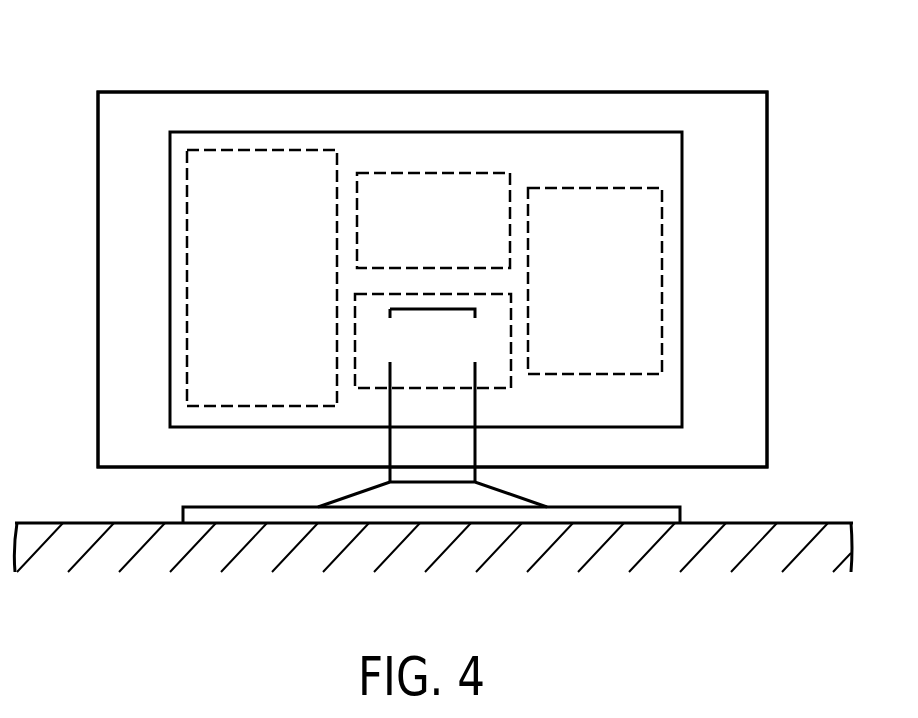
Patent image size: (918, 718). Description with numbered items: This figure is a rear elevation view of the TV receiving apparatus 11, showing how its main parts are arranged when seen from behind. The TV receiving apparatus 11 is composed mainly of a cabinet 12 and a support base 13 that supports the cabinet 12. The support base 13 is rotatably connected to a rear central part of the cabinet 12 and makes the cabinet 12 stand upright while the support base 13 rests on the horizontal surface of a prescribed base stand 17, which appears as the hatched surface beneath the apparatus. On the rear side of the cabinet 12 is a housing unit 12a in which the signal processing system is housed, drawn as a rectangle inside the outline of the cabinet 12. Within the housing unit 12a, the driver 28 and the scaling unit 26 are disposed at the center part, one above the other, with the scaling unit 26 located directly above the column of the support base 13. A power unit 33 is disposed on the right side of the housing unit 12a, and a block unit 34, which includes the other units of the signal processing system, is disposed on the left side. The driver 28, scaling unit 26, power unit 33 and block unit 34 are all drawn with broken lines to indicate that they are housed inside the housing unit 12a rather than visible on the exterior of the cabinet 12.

The TV receiving apparatus 11 is at (454, 62).
The cabinet 12 is at (715, 90).
The housing unit 12a is at (600, 132).
The support base 13 is at (658, 507).
The base stand 17 is at (818, 522).
The scaling unit 26 is at (487, 388).
The driver 28 is at (483, 175).
The power unit 33 is at (597, 374).
The block unit 34 is at (187, 342).